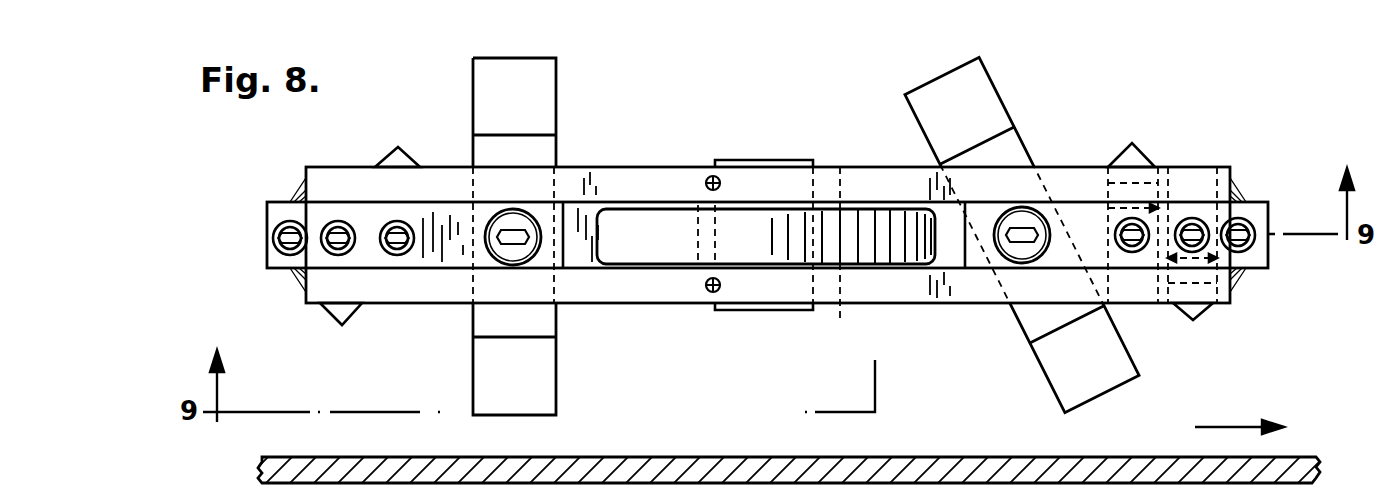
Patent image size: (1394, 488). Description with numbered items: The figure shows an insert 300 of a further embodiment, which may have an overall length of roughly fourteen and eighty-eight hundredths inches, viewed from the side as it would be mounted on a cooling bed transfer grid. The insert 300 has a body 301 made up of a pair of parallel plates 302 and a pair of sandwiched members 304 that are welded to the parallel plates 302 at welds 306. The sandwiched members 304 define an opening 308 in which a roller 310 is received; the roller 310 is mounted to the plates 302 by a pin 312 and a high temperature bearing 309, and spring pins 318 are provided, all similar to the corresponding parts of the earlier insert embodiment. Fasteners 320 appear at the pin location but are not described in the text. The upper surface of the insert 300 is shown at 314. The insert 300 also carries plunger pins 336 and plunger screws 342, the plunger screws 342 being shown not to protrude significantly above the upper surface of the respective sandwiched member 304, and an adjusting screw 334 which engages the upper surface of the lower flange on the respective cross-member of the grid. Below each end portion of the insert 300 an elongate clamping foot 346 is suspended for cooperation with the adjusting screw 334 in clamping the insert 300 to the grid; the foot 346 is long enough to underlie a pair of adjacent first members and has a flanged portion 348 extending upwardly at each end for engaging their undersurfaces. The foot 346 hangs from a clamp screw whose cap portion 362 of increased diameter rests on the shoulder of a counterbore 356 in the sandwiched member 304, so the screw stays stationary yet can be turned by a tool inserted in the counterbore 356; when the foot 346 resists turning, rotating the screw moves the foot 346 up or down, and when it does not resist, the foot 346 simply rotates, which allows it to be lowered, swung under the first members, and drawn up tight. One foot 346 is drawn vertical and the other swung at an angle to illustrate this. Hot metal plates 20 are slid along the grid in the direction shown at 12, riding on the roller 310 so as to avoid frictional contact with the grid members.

The direction of movement 12 is at (1213, 427).
The hot metal plate 20 is at (350, 457).
The insert 300 is at (765, 190).
The body 301 is at (592, 168).
The parallel plates 302 is at (885, 167).
The sandwiched members 304 is at (270, 208).
The welds 306 is at (304, 182).
The opening 308 is at (912, 268).
The high temperature bearing 309 is at (841, 308).
The roller 310 is at (625, 250).
The pin 312 is at (732, 308).
The upper surface 314 is at (660, 176).
The spring pins 318 is at (708, 178).
The screw 320 is at (721, 183).
The adjusting screw 334 is at (272, 237).
The plunger pins 336 is at (412, 165).
The plunger screws 342 is at (1192, 215).
The clamping foot 346 is at (557, 385).
The flanged portion 348 is at (1047, 226).
The counterbore 356 is at (1020, 262).
The cap portion 362 is at (1040, 166).